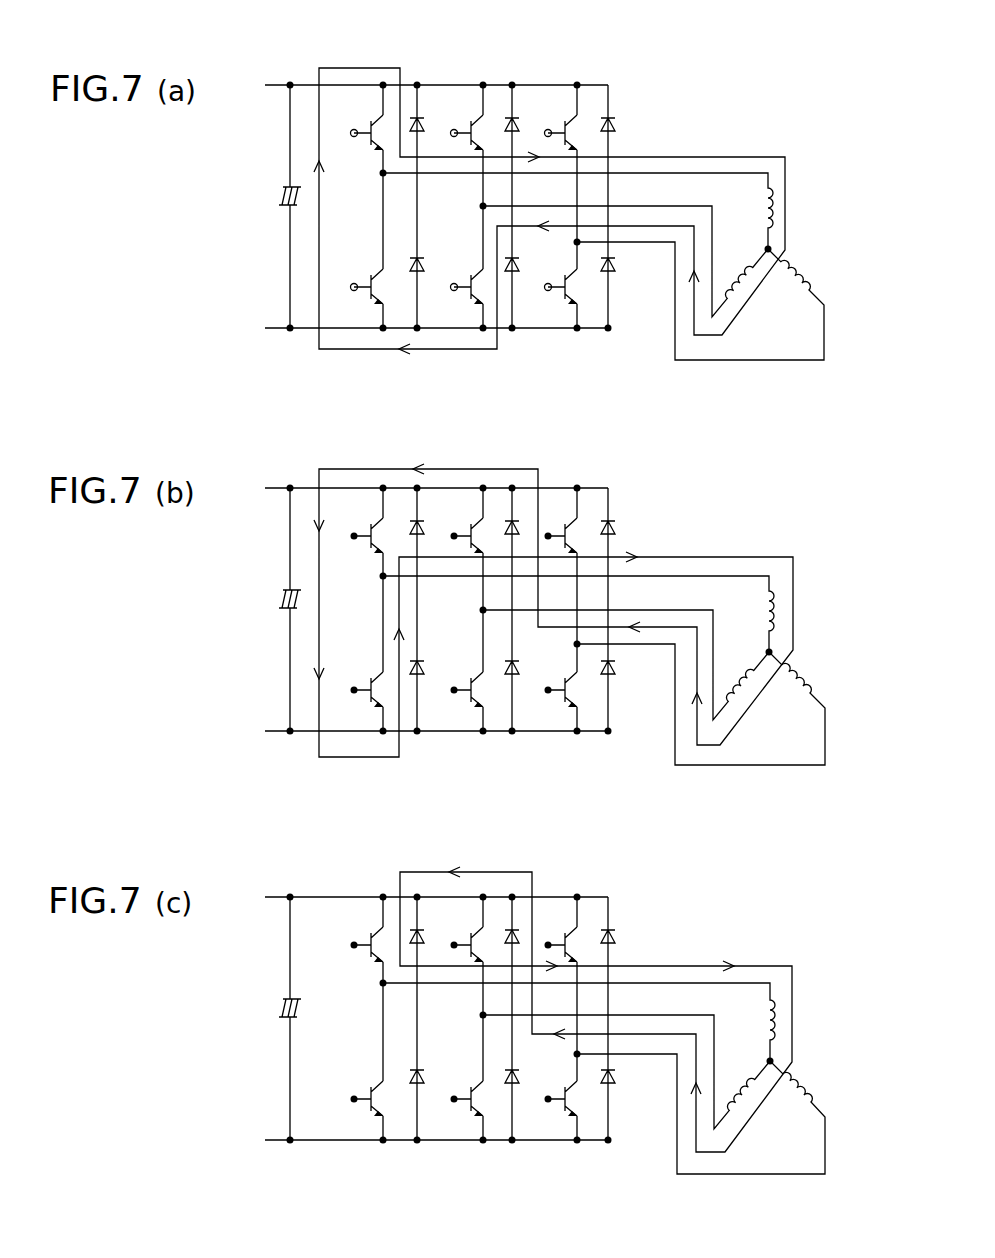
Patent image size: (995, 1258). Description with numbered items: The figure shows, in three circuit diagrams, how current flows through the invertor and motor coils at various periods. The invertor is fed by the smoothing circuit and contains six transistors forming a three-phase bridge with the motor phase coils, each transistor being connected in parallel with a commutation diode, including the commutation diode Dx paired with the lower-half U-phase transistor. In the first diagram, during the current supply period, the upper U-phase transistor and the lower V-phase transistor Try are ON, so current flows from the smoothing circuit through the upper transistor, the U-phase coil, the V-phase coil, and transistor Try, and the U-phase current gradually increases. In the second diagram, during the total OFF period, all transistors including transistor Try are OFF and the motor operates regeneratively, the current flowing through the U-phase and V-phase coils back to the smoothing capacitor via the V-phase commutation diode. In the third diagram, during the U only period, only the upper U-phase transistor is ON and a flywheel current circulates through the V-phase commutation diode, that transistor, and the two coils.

The transistor Try is at (466, 277).
The commutation diode Dx is at (437, 668).